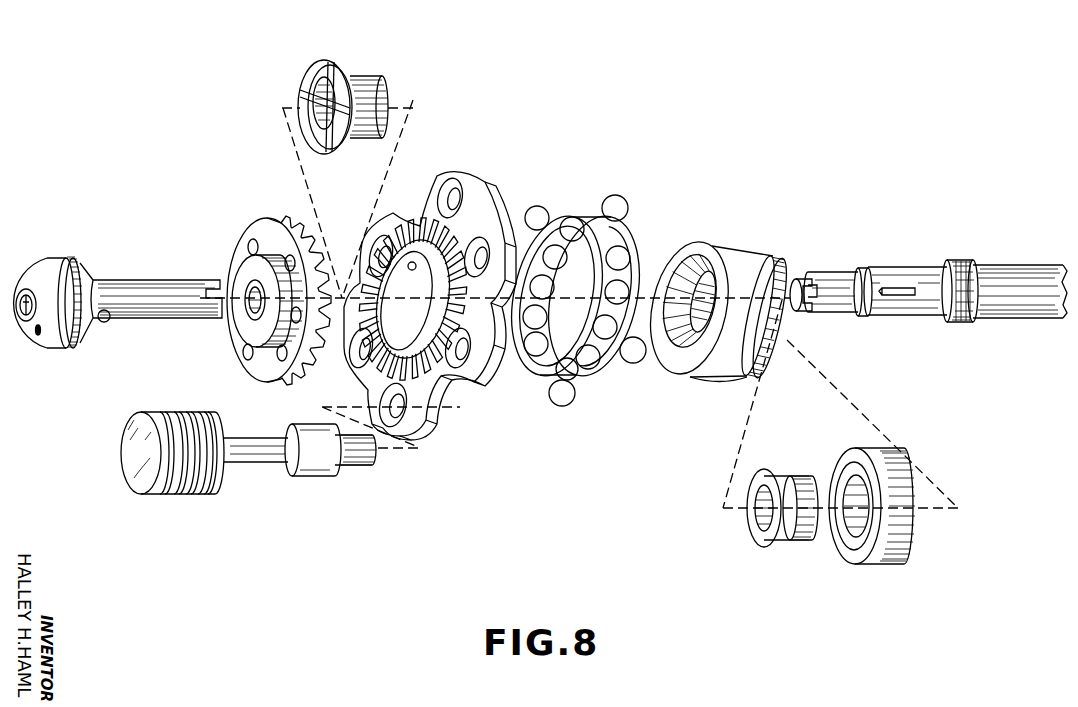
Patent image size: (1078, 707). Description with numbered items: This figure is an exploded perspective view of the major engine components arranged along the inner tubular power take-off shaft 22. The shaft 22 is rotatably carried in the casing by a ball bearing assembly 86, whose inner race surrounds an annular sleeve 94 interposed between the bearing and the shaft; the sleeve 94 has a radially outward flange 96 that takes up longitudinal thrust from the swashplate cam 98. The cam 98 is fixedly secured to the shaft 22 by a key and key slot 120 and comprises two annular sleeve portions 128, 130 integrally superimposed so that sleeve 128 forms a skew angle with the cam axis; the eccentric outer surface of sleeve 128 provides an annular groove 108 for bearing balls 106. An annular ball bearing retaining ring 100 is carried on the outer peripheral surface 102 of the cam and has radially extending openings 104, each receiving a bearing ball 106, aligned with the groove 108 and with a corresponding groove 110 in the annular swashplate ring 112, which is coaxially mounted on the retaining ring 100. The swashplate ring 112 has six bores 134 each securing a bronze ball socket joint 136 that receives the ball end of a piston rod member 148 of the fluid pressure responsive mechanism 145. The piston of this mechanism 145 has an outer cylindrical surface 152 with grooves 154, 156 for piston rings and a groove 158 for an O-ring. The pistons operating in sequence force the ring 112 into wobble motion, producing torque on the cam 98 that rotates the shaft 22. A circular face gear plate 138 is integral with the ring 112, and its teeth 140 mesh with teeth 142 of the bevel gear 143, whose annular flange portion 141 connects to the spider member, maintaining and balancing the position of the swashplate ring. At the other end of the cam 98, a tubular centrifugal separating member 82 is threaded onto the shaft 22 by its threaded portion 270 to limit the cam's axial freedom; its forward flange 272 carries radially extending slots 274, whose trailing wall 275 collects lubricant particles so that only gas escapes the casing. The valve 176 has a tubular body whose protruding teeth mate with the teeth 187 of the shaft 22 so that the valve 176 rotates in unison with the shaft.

The valve 176 is at (146, 281).
The bevel gear 143 is at (240, 251).
The teeth of the bevel gear 142 is at (300, 222).
The annular flange portion 141 is at (246, 332).
The teeth of the face gear plate 140 is at (354, 360).
The annular swashplate ring 112 is at (423, 301).
The groove in the swashplate ring 110 is at (412, 262).
The bores 134 is at (458, 203).
The circular face gear plate 138 is at (425, 385).
The annular ball bearing retaining ring 100 is at (575, 310).
The radially extending openings 104 is at (605, 325).
The bearing ball 106 is at (574, 398).
The swashplate cam 98 is at (716, 302).
The outer peripheral surface of the cam 102 is at (707, 242).
The annular sleeve portion 128 is at (690, 262).
The key slot 120 is at (692, 298).
The annular groove in the swashplate cam 108 is at (730, 253).
The annular sleeve portion 130 is at (743, 385).
The protruding teeth of the inner shaft 187 is at (812, 283).
The inner tubular power take-off shaft 22 is at (1008, 320).
The centrifugal separating member 82 is at (354, 89).
The flange 272 is at (313, 62).
The radially extending slots 274 is at (337, 65).
The threaded portion 270 is at (353, 70).
The trailing wall of the slot 275 is at (310, 92).
The fluid pressure responsive mechanism 145 is at (160, 450).
The annular groove 154 is at (158, 412).
The annular groove 156 is at (171, 412).
The groove 158 is at (198, 412).
The outer cylindrical surface of the piston 152 is at (182, 494).
The piston rod member 148 is at (267, 465).
The bronze ball socket joint 136 is at (337, 472).
The flange 96 is at (787, 510).
The annular sleeve 94 is at (798, 474).
The ball bearing assembly 86 is at (880, 563).